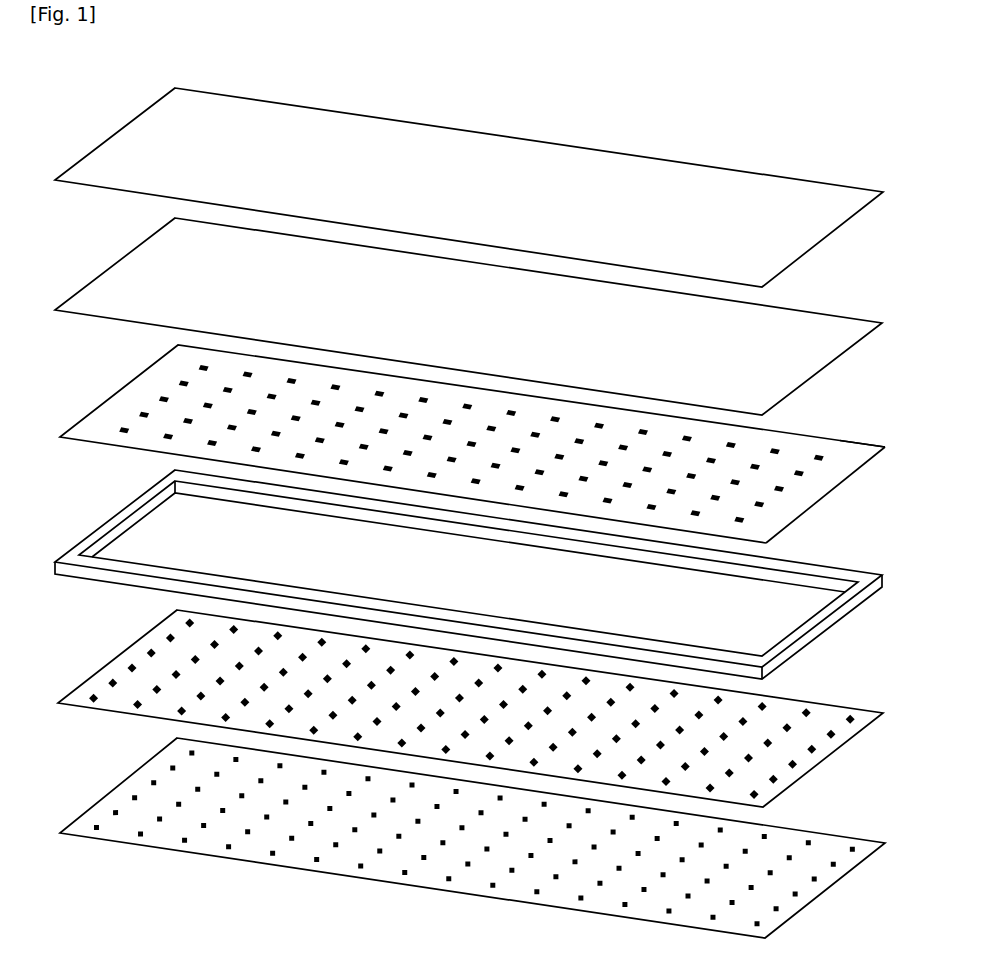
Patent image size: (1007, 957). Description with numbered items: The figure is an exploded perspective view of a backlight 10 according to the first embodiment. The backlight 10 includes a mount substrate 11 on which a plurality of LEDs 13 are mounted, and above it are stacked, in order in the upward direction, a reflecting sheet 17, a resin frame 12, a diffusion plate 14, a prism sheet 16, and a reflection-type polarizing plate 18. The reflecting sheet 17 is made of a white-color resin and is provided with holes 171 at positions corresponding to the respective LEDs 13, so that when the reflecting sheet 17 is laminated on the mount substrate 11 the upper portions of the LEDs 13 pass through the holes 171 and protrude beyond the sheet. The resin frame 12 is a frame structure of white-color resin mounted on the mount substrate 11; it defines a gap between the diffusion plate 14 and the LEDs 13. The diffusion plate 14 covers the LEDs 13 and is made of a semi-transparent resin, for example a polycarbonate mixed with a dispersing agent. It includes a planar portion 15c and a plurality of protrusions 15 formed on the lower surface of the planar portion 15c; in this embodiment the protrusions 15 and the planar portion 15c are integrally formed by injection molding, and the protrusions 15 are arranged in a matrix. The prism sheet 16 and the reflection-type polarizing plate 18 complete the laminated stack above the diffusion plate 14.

The backlight 10 is at (667, 120).
The mount substrate 11 is at (818, 897).
The LEDs 13 is at (833, 863).
The reflecting sheet 17 is at (853, 737).
The holes 171 is at (777, 780).
The resin frame 12 is at (843, 612).
The diffusion plate 14 is at (822, 498).
The protrusions 15 is at (795, 474).
The planar portion 15c is at (860, 449).
The prism sheet 16 is at (827, 365).
The reflection-type polarizing plate 18 is at (830, 233).